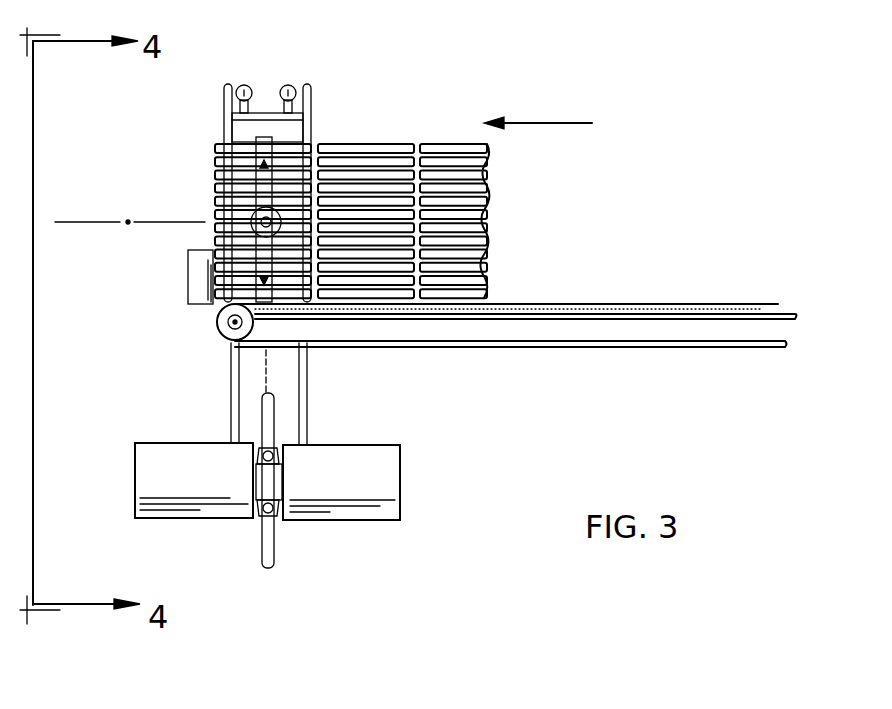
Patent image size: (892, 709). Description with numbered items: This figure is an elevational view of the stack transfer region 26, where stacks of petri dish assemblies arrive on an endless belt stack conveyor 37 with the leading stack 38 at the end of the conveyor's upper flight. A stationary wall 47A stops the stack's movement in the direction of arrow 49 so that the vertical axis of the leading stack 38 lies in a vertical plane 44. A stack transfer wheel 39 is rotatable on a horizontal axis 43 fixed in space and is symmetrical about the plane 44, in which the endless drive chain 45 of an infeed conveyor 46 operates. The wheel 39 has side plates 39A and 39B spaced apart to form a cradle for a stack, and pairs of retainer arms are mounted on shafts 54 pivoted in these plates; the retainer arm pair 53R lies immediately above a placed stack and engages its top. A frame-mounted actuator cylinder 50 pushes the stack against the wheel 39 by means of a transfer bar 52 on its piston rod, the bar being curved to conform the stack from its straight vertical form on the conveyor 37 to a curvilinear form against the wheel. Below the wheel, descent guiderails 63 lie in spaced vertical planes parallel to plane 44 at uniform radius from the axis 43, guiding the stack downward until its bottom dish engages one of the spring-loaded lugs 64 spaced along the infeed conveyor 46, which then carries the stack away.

The transfer region 26 is at (340, 128).
The endless belt stack conveyor 37 is at (548, 364).
The leading stack 38 is at (215, 164).
The stack transfer wheel 39 is at (212, 92).
The wheel side plate 39A is at (224, 120).
The wheel side plate 39B is at (313, 106).
The horizontal axis 43 is at (126, 224).
The vertical plane 44 is at (267, 364).
The endless drive chain 45 is at (280, 454).
The infeed conveyor 46 is at (244, 530).
The stationary wall 47A is at (198, 276).
The arrow 49 is at (527, 122).
The actuator cylinder 50 is at (215, 208).
The transfer bar 52 is at (215, 236).
The retainer arm pair 53R is at (290, 84).
The shaft 54 is at (250, 84).
The descent guiderails 63 is at (232, 373).
The spring-loaded lugs 64 is at (262, 405).